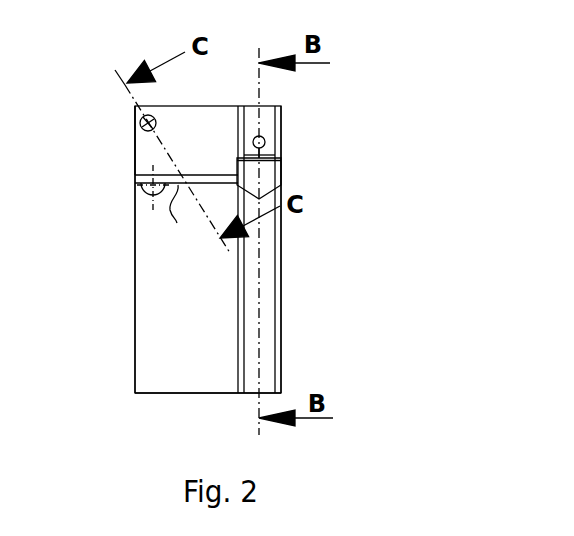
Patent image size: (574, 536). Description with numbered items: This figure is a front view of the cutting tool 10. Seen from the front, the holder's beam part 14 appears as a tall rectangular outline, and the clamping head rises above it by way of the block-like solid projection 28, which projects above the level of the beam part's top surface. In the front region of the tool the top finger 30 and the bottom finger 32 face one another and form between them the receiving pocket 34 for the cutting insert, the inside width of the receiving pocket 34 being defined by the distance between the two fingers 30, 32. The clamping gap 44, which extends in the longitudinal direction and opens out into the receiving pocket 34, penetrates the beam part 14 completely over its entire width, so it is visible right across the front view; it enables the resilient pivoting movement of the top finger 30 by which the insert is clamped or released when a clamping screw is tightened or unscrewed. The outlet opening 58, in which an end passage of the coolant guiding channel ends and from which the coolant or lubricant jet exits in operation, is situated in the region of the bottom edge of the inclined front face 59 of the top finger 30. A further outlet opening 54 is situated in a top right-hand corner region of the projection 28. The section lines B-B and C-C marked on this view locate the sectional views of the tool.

The cutting tool 10 is at (305, 266).
The beam part 14 is at (138, 280).
The projection 28 is at (138, 158).
The top finger 30 is at (266, 141).
The bottom finger 32 is at (272, 227).
The receiving pocket 34 is at (262, 180).
The clamping gap 44 is at (162, 207).
The outlet opening 54 is at (141, 126).
The outlet opening 58 is at (250, 143).
The front face 59 is at (258, 135).